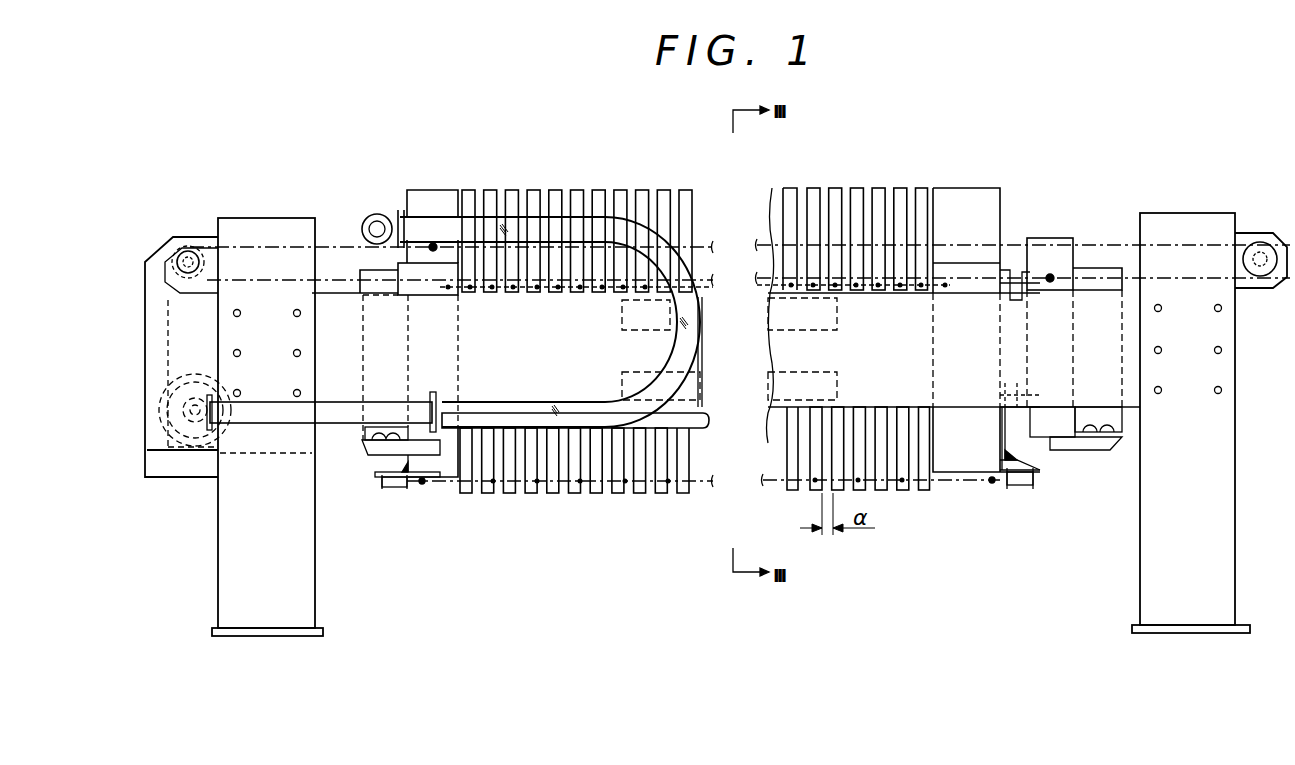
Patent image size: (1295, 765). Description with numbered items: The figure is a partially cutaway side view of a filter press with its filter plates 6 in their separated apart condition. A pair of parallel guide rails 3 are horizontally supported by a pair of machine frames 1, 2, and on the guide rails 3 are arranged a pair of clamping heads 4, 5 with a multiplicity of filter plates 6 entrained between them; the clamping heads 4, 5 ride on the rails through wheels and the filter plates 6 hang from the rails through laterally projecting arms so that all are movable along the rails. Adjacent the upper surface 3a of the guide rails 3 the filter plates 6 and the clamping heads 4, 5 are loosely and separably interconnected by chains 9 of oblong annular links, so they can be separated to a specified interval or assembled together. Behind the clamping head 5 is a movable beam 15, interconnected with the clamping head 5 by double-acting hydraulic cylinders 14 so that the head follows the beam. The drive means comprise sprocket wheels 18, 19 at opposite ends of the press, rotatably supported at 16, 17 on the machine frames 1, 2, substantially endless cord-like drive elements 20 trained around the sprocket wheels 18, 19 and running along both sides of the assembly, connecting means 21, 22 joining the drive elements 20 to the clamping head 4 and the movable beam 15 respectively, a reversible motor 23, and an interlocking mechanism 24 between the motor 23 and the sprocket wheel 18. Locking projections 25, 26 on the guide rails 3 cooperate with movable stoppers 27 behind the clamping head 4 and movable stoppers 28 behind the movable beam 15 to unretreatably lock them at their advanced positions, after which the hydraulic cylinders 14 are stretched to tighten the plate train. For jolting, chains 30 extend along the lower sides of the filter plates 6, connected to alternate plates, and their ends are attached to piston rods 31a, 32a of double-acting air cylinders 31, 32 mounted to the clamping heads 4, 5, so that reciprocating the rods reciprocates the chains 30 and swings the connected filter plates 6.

The machine frame 1 is at (253, 547).
The machine frame 2 is at (1212, 551).
The guide rail 3 is at (770, 355).
The upper surface of guide rail 3a is at (968, 290).
The clamping head 4 is at (447, 462).
The clamping head 5 is at (957, 455).
The filter plate 6 is at (555, 197).
The chain 9 is at (525, 288).
The double-acting hydraulic cylinder 14 is at (1013, 290).
The movable beam 15 is at (1062, 422).
The sprocket wheel support 16 is at (185, 267).
The sprocket wheel support 17 is at (1249, 240).
The sprocket wheel 18 is at (188, 262).
The sprocket wheel 19 is at (1268, 242).
The cord-like drive element 20 is at (334, 280).
The connecting means 21 is at (433, 245).
The connecting means 22 is at (1050, 275).
The reversible motor 23 is at (196, 375).
The interlocking mechanism 24 is at (167, 312).
The locking projection 25 is at (622, 380).
The locking projection 26 is at (837, 383).
The movable stopper 27 is at (362, 430).
The movable stopper 28 is at (1111, 415).
The chain 30 is at (592, 488).
The double-acting air cylinder 31 is at (390, 488).
The piston rod 31a is at (422, 485).
The double-acting air cylinder 32 is at (1020, 487).
The piston rod 32a is at (992, 482).